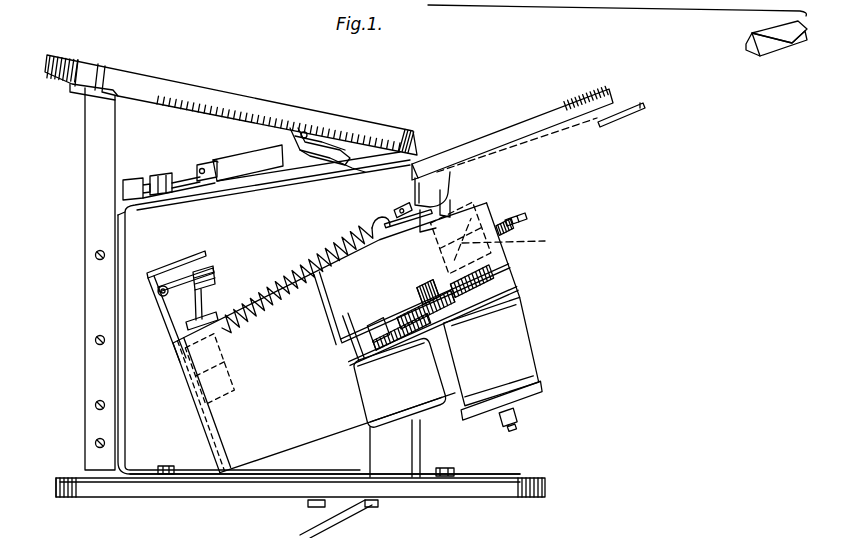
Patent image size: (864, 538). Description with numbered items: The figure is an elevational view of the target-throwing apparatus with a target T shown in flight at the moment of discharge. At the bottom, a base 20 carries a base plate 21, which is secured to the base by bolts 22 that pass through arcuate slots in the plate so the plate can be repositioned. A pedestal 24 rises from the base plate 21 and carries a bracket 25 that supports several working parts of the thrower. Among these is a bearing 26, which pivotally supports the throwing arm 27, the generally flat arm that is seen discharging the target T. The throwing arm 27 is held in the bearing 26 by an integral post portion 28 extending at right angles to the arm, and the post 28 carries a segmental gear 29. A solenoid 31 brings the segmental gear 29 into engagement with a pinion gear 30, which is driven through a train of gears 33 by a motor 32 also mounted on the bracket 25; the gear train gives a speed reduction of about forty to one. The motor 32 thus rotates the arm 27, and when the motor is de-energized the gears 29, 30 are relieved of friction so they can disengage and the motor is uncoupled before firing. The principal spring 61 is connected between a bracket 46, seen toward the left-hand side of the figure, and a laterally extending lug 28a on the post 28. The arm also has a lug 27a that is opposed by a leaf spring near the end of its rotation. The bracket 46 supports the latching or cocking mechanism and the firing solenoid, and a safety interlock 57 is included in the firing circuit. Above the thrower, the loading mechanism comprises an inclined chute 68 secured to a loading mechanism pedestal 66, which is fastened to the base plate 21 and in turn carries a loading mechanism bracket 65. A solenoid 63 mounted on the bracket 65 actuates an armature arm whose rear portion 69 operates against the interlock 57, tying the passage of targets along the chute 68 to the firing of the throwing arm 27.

The target T is at (774, 40).
The inclined chute 68 is at (205, 100).
The loading mechanism pedestal 66 is at (98, 305).
The loading mechanism bracket 65 is at (123, 258).
The safety interlock 57 is at (135, 178).
The rear portion of the armature arm 69 is at (200, 165).
The solenoid 63 is at (247, 167).
The principal spring 61 is at (280, 290).
The bracket 25 is at (353, 337).
The bracket 46 is at (183, 373).
The gear train 33 is at (400, 311).
The motor 32 is at (373, 385).
The solenoid 31 is at (545, 382).
The throwing arm 27 is at (588, 131).
The arm lug 27a is at (640, 108).
The post portion 28 is at (450, 205).
The laterally extending lug 28a is at (420, 210).
The pinion gear 30 is at (512, 212).
The segmental gear 29 is at (527, 222).
The bearing 26 is at (516, 240).
The base 20 is at (548, 477).
The base plate 21 is at (473, 475).
The bolts 22 is at (165, 478).
The pedestal 24 is at (398, 457).